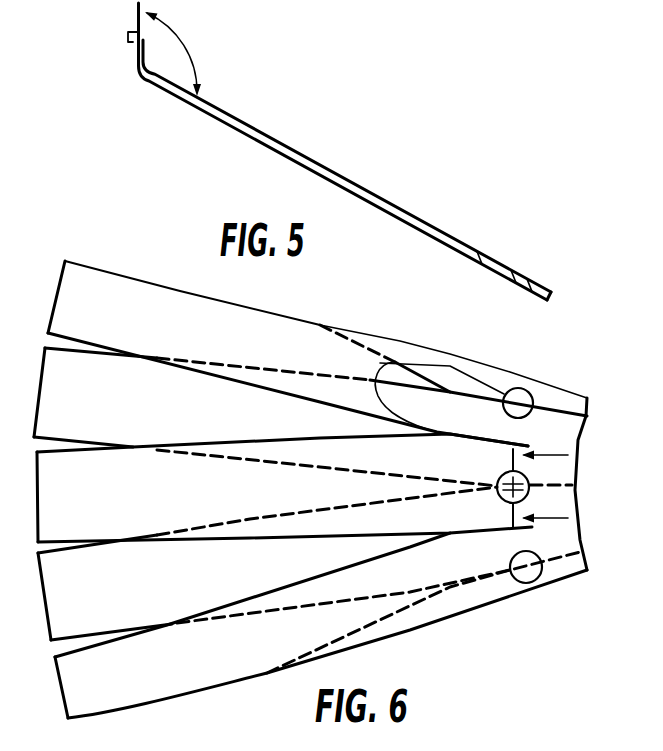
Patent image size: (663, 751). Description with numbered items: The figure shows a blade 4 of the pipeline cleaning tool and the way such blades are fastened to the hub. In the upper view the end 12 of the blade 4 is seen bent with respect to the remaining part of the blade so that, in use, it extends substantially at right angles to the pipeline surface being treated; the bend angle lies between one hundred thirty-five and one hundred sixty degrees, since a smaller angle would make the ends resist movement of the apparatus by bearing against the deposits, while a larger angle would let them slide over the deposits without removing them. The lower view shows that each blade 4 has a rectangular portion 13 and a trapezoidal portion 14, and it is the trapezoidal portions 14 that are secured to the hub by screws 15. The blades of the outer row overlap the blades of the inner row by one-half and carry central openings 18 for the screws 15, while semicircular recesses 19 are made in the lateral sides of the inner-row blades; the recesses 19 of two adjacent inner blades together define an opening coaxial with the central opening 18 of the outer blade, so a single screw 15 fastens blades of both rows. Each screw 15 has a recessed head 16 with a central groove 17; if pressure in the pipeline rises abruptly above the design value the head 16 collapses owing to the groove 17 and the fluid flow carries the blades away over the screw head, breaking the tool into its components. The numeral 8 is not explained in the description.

In FIG. 5, the blade 4 is at (315, 167).
In FIG. 5, the end of the blade 12 is at (133, 47).
In FIG. 6, the rectangular portion 13 is at (70, 318).
In FIG. 6, the trapezoidal portion 14 is at (547, 418).
In FIG. 6, the slat 8 is at (62, 485).
In FIG. 6, the screw 15 is at (509, 501).
In FIG. 6, the recessed head 16 is at (505, 478).
In FIG. 6, the central groove 17 is at (540, 483).
In FIG. 6, the central opening 18 is at (518, 560).
In FIG. 6, the semicircular recess 19 is at (512, 410).